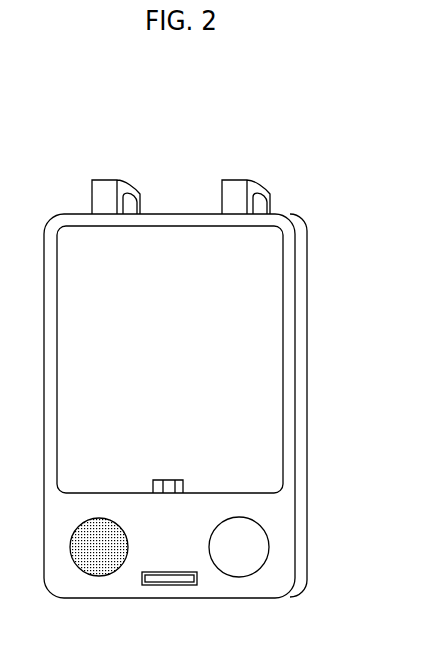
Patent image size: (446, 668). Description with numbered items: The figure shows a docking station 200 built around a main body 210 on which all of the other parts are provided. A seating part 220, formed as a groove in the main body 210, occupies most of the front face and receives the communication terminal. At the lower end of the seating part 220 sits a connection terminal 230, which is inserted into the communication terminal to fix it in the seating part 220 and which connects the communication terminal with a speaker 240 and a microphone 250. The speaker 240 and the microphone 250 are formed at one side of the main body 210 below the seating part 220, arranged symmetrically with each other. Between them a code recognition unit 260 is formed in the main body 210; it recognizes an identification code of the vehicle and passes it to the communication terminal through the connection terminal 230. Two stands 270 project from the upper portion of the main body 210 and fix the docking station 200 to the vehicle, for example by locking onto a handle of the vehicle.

The docking station 200 is at (193, 104).
The main body 210 is at (287, 515).
The seating part 220 is at (262, 340).
The connection terminal 230 is at (183, 480).
The speaker 240 is at (100, 574).
The microphone 250 is at (240, 575).
The code recognition unit 260 is at (167, 585).
The stand 270 is at (232, 180).